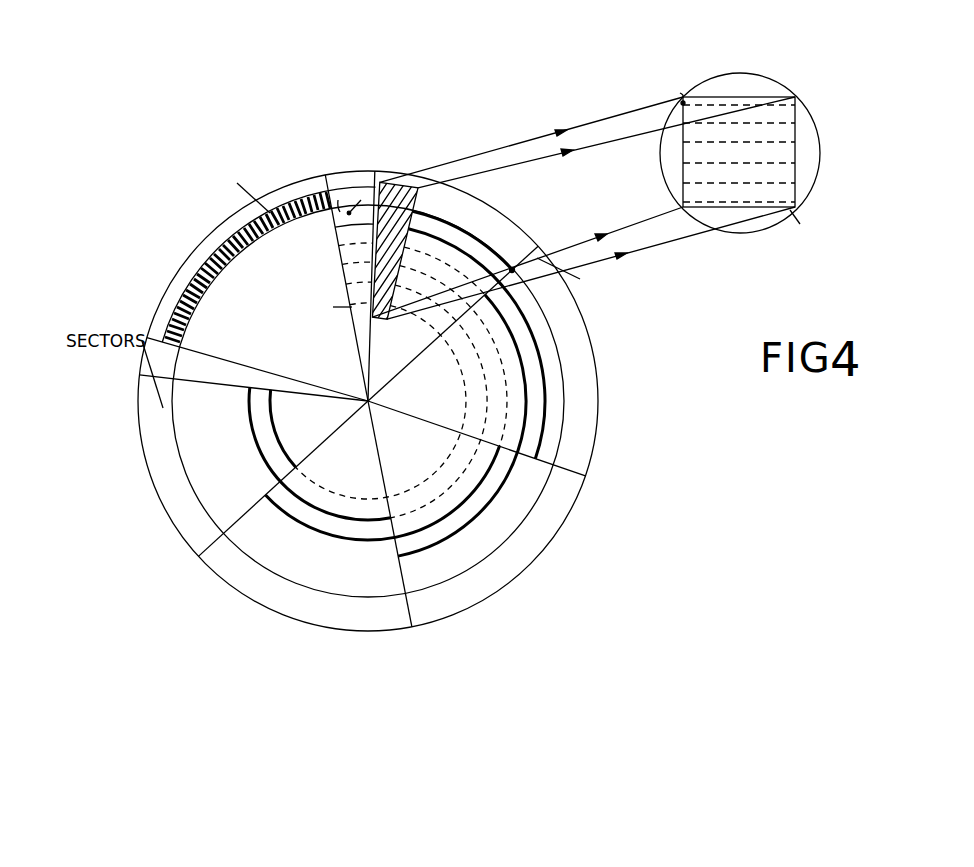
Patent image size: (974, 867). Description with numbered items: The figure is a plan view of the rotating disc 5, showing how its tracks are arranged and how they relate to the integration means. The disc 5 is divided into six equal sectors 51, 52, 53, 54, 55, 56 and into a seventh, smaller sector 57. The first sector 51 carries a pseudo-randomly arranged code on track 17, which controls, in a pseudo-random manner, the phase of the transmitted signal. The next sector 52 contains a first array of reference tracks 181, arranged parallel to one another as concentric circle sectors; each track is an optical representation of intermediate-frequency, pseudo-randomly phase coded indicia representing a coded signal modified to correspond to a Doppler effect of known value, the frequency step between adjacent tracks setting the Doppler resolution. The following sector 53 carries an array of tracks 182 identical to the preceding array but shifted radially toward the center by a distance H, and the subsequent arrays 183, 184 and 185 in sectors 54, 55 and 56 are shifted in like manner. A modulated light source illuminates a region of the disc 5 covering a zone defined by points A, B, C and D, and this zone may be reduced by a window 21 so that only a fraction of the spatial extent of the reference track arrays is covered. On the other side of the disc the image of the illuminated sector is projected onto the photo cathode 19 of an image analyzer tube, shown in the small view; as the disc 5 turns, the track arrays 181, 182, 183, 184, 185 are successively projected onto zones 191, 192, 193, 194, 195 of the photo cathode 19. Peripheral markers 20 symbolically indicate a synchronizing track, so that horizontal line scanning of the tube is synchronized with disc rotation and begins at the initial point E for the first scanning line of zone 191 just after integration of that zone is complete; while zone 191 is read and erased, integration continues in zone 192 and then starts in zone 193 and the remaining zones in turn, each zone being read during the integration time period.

The disc 5 is at (180, 500).
The track 17 is at (238, 258).
The photo cathode 19 is at (814, 187).
The peripheral markers 20 is at (536, 253).
The window 21 is at (404, 182).
The first sector 51 is at (341, 286).
The sector 52 is at (453, 323).
The sector 53 is at (476, 430).
The sector 54 is at (394, 514).
The sector 55 is at (283, 478).
The sector 56 is at (253, 402).
The seventh sector 57 is at (257, 369).
The reference tracks 181 is at (490, 255).
The tracks 182 is at (535, 357).
The array 183 is at (480, 512).
The array 184 is at (345, 538).
The array 185 is at (262, 456).
The zone 191 is at (739, 114).
The zone 192 is at (739, 135).
The zone 193 is at (739, 155).
The zone 194 is at (739, 175).
The zone 195 is at (739, 194).